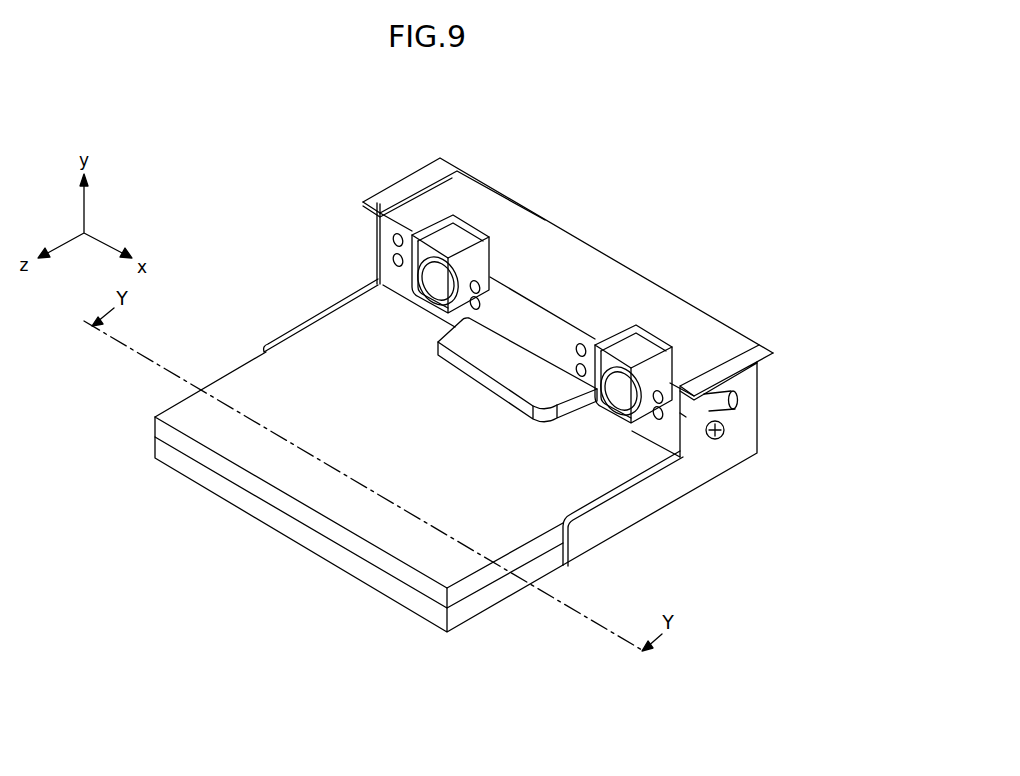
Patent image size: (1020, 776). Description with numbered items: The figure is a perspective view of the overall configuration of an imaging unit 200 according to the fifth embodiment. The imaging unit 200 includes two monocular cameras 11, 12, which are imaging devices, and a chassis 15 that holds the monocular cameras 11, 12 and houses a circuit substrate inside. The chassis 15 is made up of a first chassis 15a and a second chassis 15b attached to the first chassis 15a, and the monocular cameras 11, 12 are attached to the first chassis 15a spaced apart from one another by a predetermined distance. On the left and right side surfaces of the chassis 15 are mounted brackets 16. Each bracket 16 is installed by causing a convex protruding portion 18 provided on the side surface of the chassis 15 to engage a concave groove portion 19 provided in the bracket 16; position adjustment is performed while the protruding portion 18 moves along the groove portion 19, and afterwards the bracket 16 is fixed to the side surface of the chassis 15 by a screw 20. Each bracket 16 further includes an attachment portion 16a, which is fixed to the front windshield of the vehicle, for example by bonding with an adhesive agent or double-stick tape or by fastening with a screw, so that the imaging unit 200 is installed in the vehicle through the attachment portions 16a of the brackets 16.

The imaging unit 200 is at (166, 132).
The chassis 15 is at (319, 492).
The first chassis 15a is at (188, 443).
The second chassis 15b is at (233, 497).
The bracket 16 is at (298, 322).
The attachment portion 16a is at (443, 164).
The monocular camera 11 is at (432, 284).
The monocular camera 12 is at (620, 392).
The protruding portion 18 is at (727, 395).
The groove portion 19 is at (683, 422).
The screw 20 is at (724, 434).